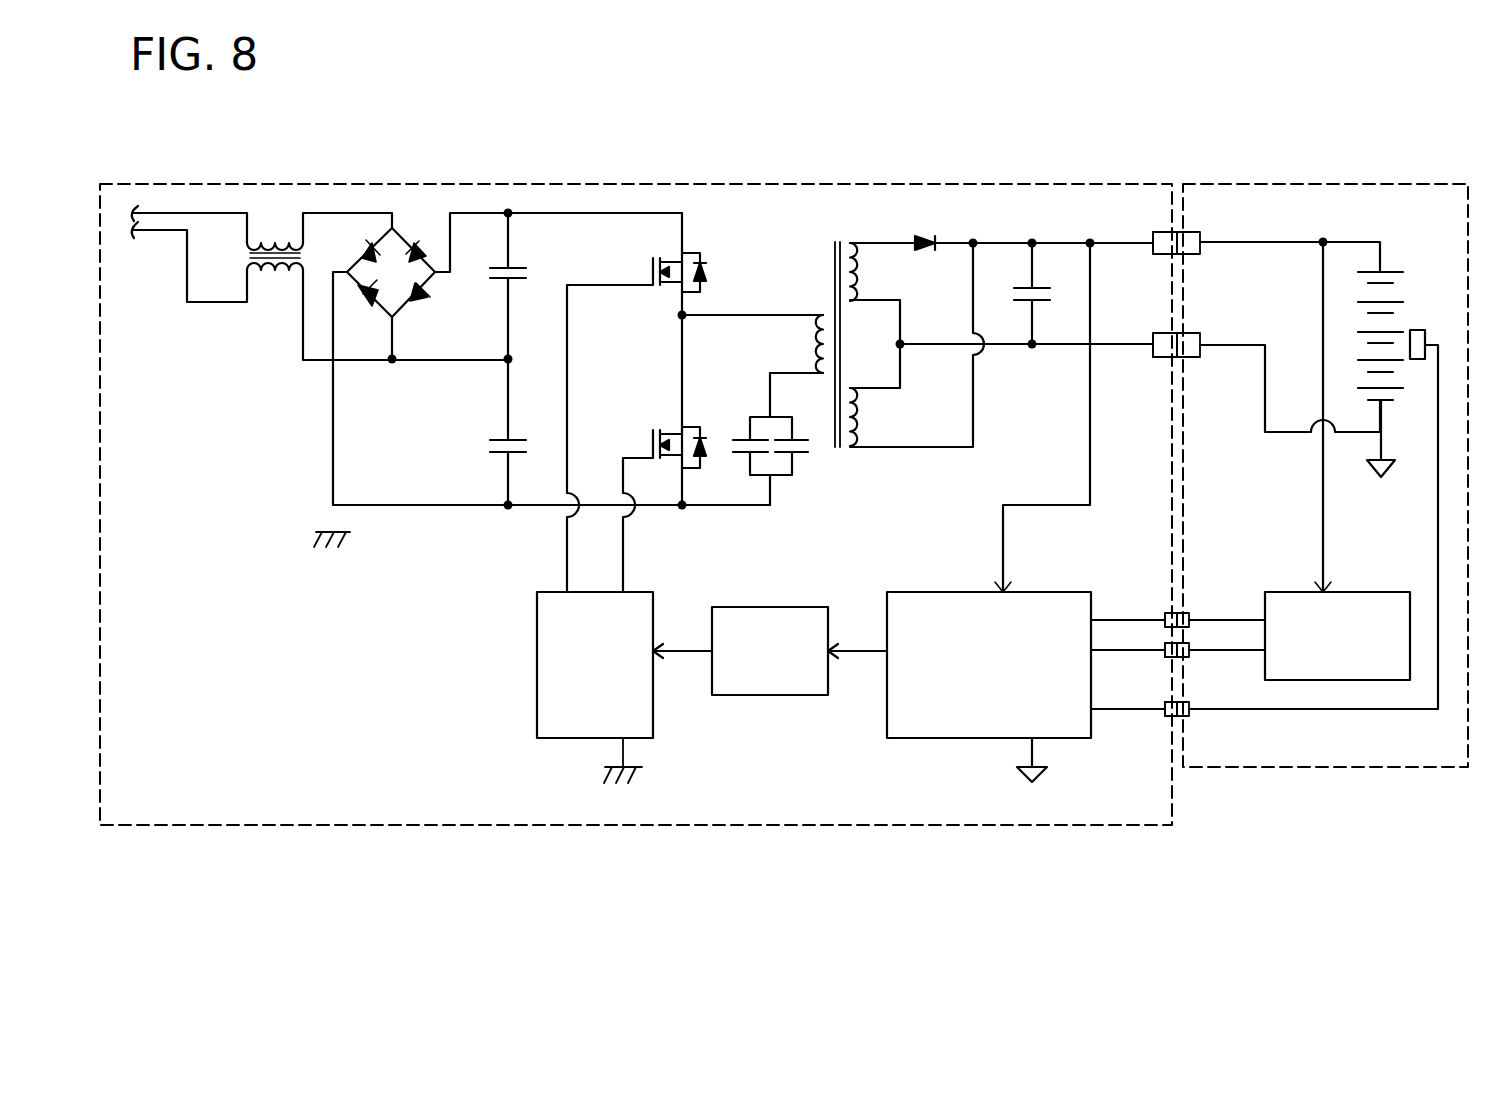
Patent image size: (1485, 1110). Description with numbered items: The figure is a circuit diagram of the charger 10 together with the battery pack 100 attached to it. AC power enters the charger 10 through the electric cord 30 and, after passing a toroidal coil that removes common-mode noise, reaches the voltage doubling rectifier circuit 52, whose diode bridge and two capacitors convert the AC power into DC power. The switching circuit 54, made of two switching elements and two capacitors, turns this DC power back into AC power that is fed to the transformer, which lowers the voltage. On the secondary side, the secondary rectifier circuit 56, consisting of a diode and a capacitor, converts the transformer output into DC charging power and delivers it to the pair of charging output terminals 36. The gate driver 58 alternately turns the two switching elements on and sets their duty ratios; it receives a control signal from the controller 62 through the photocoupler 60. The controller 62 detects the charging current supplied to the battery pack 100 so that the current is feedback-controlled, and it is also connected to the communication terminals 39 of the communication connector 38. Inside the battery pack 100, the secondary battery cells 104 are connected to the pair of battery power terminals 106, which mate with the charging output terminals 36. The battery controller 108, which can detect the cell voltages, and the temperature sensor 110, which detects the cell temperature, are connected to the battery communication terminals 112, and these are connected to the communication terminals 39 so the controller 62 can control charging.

The charger 10 is at (198, 828).
The electric cord 30 is at (158, 213).
The voltage doubling rectifier circuit 52 is at (433, 195).
The switching circuit 54 is at (645, 195).
The secondary rectifier circuit 56 is at (905, 195).
The gate driver 58 is at (567, 738).
The photocoupler 60 is at (770, 695).
The controller 62 is at (945, 738).
The communication connector 38 is at (1157, 722).
The communication terminals 39 is at (1165, 709).
The charging output terminals 36 is at (1153, 333).
The battery pack 100 is at (1278, 183).
The battery power terminals 106 is at (1200, 333).
The battery communication terminals 112 is at (1189, 622).
The secondary battery cells 104 is at (1395, 272).
The temperature sensor 110 is at (1418, 330).
The battery controller 108 is at (1396, 680).